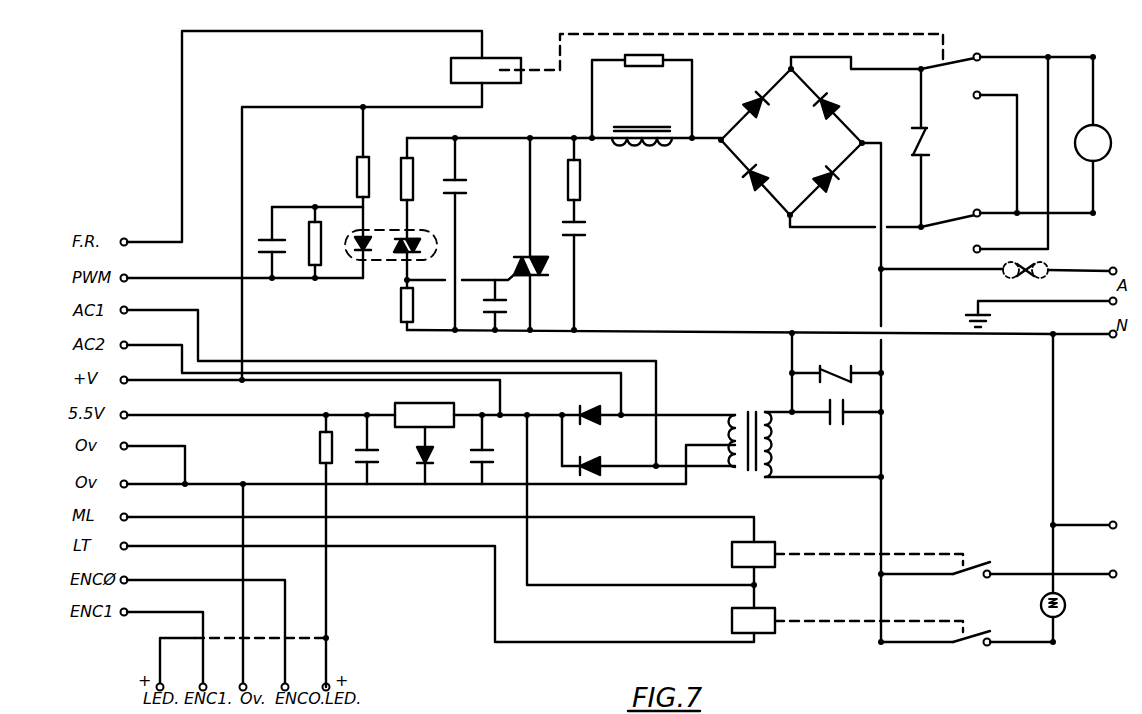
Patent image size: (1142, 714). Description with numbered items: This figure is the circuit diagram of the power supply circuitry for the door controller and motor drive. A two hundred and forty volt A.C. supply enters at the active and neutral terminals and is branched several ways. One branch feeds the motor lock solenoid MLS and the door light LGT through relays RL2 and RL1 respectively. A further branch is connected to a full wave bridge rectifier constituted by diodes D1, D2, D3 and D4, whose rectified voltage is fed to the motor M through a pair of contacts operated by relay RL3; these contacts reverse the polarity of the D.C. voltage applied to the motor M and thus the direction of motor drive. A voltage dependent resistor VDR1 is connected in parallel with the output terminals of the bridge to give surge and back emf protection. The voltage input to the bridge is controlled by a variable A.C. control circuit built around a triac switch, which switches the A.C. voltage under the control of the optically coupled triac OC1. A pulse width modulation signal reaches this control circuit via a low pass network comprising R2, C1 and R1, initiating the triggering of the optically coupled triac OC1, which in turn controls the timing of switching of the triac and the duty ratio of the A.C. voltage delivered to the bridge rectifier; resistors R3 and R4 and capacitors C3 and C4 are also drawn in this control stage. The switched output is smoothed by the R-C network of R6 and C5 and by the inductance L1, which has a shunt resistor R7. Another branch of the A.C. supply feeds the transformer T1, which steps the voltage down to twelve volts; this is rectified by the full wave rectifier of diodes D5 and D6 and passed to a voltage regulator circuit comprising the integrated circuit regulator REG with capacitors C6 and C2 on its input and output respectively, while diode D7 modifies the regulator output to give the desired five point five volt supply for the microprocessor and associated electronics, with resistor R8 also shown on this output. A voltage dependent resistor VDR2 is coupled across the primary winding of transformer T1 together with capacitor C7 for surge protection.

The relay RL3 is at (592, 207).
The resistor R1 is at (328, 242).
The resistor R2 is at (375, 172).
The resistor R3 is at (418, 169).
The resistor R4 is at (419, 305).
The resistor R6 is at (587, 180).
The shunt resistor R7 is at (642, 88).
The resistor R8 is at (338, 526).
The capacitor C1 is at (278, 242).
The capacitor C2 is at (374, 449).
The capacitor C3 is at (501, 306).
The capacitor C4 is at (467, 234).
The capacitor C5 is at (588, 275).
The capacitor C6 is at (489, 450).
The capacitor C7 is at (836, 418).
The diode D1 is at (753, 97).
The diode D2 is at (745, 184).
The diode D3 is at (834, 186).
The diode D4 is at (833, 101).
The diode D5 is at (657, 406).
The diode D6 is at (648, 445).
The diode D7 is at (438, 455).
The inductance L1 is at (642, 144).
The transformer T1 is at (805, 435).
The optically coupled triac OC1 is at (391, 243).
The relay RL1 is at (861, 627).
The relay RL2 is at (861, 575).
The voltage dependent resistor VDR1 is at (943, 148).
The voltage dependent resistor VDR2 is at (836, 364).
The integrated circuit regulator REG is at (424, 415).
The motor M is at (1093, 135).
The motor lock solenoid MLS is at (1060, 463).
The door light LGT is at (1048, 617).